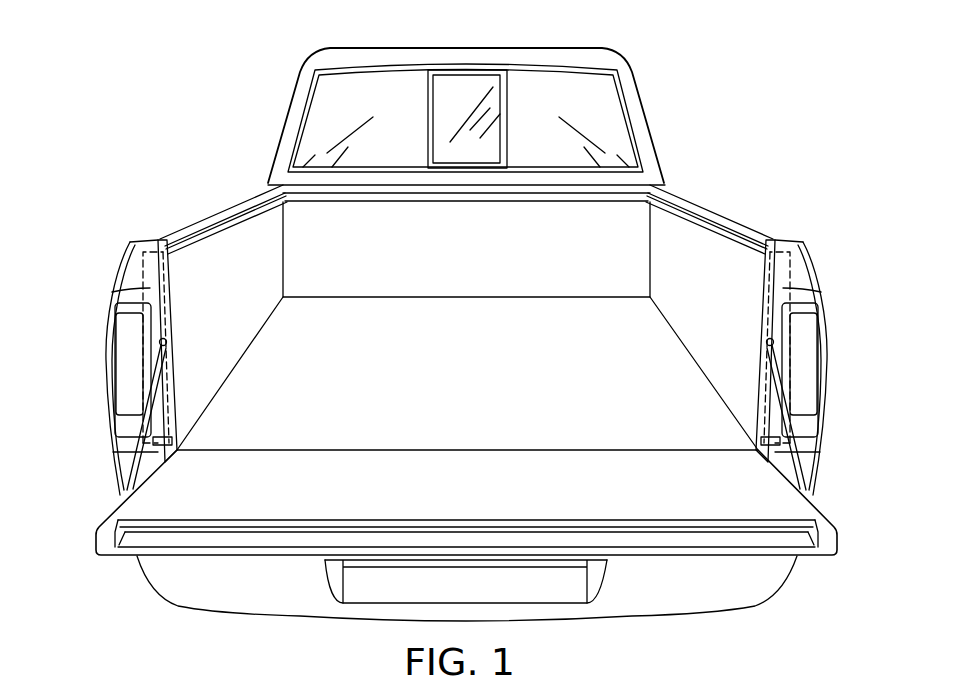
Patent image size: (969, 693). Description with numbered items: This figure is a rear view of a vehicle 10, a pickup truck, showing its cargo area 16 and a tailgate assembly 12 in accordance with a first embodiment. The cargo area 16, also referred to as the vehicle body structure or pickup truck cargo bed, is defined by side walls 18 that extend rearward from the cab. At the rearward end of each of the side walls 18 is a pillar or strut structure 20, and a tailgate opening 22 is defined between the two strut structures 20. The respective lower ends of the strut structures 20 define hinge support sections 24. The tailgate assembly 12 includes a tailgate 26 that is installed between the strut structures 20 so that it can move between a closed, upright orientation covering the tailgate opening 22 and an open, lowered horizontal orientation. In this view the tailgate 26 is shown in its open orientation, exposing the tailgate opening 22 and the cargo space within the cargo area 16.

The vehicle 10 is at (627, 32).
The tailgate assembly 12 is at (117, 507).
The cargo area 16 is at (702, 193).
The side walls 18 is at (120, 280).
The strut structures 20 is at (145, 268).
The tailgate opening 22 is at (174, 378).
The hinge support sections 24 is at (184, 437).
The tailgate 26 is at (597, 482).